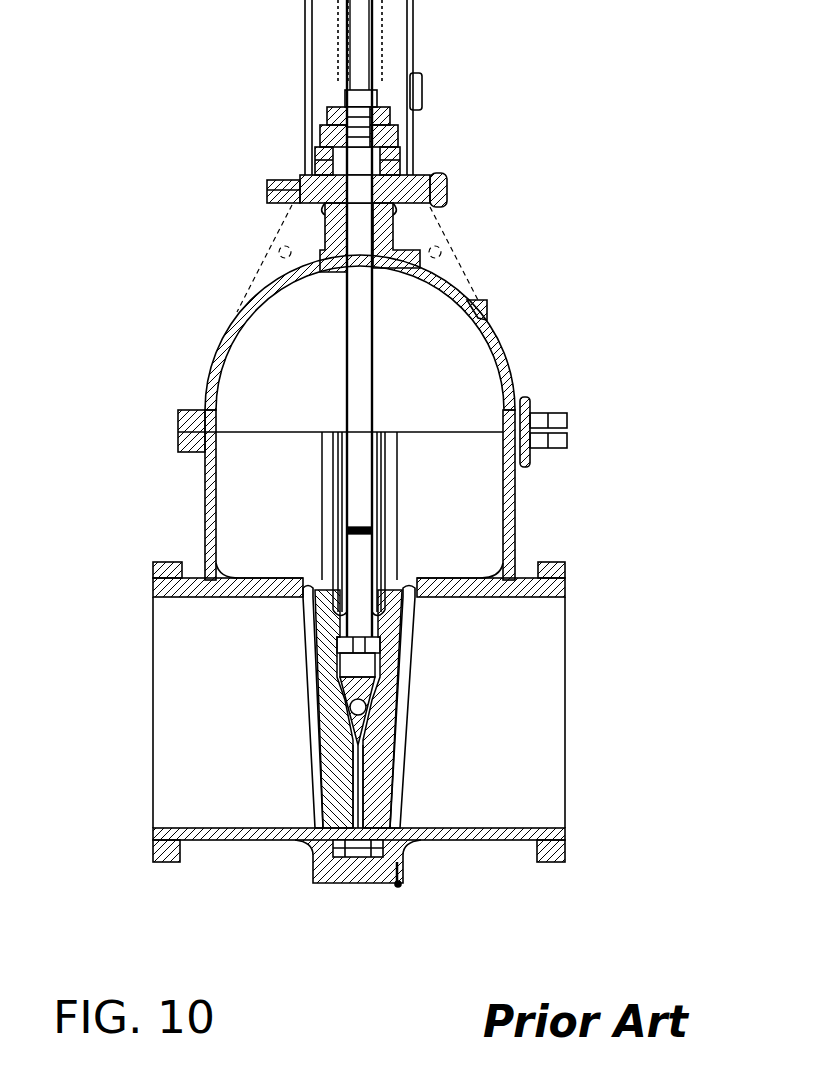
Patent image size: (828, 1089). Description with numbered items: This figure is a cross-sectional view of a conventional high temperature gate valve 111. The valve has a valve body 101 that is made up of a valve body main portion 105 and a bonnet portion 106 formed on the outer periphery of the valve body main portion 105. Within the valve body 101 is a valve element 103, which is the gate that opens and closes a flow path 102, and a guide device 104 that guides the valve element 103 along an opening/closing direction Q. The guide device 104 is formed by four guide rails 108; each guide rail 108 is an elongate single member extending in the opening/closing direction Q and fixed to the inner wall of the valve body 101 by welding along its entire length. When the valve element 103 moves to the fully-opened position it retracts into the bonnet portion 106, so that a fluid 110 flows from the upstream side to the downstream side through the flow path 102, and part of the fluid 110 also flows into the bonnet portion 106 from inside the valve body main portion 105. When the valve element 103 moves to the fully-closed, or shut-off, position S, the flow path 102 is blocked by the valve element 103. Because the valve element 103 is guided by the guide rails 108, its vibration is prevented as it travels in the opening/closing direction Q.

The valve body 101 is at (483, 845).
The flow path 102 is at (479, 727).
The valve element 103 is at (315, 630).
The guide device 104 is at (388, 490).
The valve body main portion 105 is at (240, 842).
The bonnet portion 106 is at (210, 500).
The guide rail 108 is at (335, 490).
The fluid 110 is at (470, 658).
The high temperature gate valve 111 is at (540, 195).
The opening/closing direction Q is at (413, 503).
The fully-closed position S is at (305, 742).